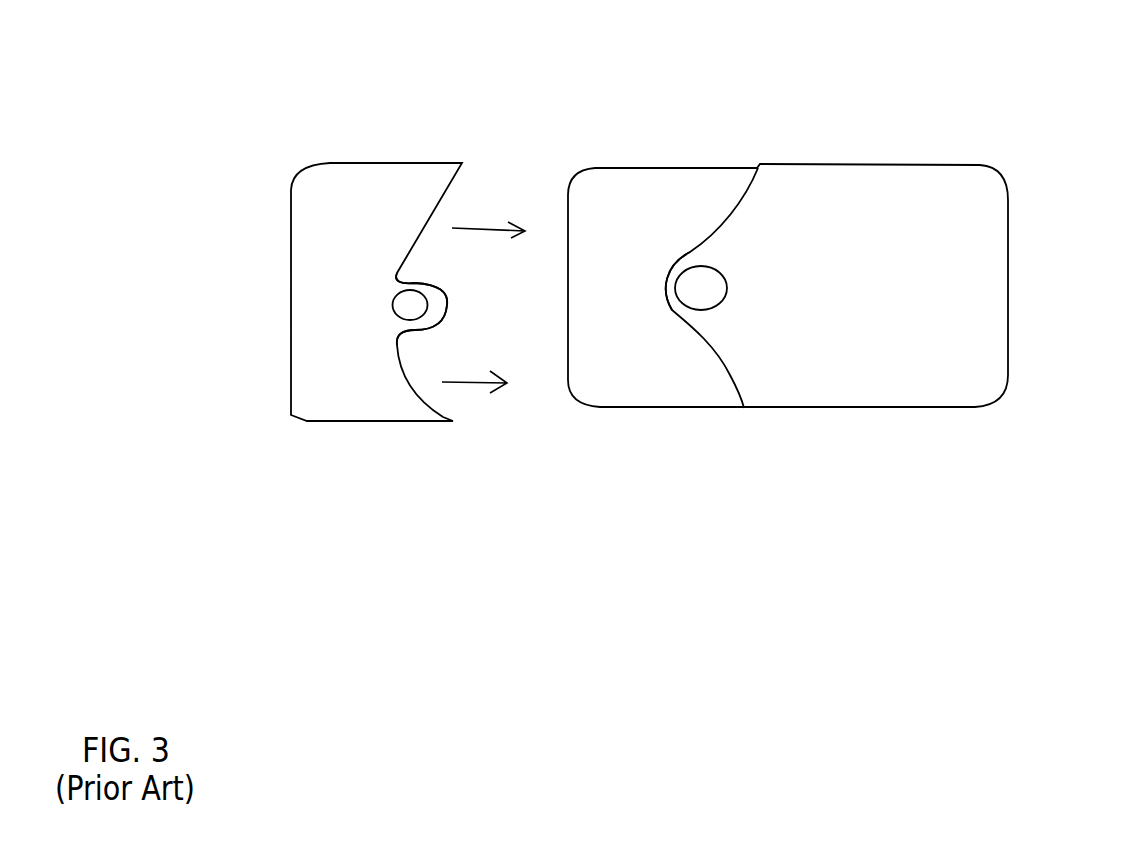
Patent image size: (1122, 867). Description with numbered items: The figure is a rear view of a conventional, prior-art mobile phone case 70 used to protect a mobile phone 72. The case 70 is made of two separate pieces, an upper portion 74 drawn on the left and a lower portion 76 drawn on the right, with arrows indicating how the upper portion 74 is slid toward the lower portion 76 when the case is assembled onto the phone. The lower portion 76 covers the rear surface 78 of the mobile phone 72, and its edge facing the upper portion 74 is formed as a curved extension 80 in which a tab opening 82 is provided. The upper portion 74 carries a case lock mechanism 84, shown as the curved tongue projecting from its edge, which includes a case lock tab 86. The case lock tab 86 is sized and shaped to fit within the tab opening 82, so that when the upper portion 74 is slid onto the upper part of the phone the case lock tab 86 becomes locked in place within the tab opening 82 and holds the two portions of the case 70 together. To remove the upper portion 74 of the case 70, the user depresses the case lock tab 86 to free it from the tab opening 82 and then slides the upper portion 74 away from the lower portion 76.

The mobile phone case 70 is at (822, 588).
The mobile phone 72 is at (642, 450).
The upper portion 74 is at (357, 402).
The lower portion 76 is at (877, 352).
The rear surface 78 is at (608, 352).
The curved extension 80 is at (661, 258).
The tab opening 82 is at (727, 285).
The case lock mechanism 84 is at (442, 268).
The case lock tab 86 is at (387, 303).